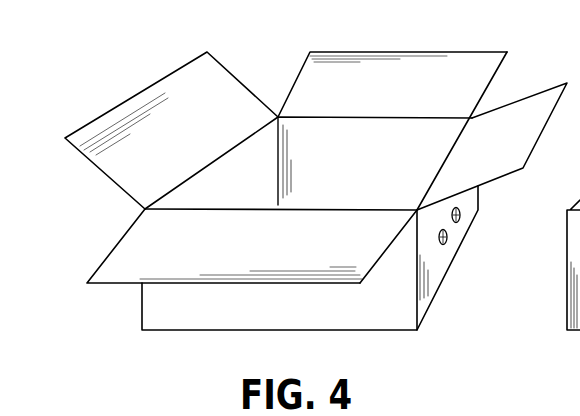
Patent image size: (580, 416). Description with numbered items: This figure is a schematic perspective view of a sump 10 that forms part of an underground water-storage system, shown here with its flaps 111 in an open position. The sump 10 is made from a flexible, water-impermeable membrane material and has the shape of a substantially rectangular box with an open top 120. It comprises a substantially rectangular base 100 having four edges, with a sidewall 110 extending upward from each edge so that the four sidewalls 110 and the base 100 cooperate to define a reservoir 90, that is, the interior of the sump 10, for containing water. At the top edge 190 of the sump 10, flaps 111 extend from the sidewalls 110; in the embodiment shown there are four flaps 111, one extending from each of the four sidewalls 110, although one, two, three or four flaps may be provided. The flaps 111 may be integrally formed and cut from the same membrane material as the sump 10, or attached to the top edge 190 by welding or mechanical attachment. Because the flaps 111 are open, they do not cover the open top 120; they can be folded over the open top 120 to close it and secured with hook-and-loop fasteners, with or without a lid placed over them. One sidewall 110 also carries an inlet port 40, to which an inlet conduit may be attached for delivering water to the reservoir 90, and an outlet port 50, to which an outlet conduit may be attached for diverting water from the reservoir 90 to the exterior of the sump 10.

The sump 10 is at (523, 68).
The inlet port/aperture 40 is at (462, 215).
The outlet port/aperture 50 is at (450, 240).
The reservoir 90 is at (370, 132).
The base 100 is at (320, 205).
The sidewalls 110 is at (192, 192).
The flaps 111 is at (158, 95).
The open top 120 is at (325, 55).
The top edge 190 is at (216, 148).